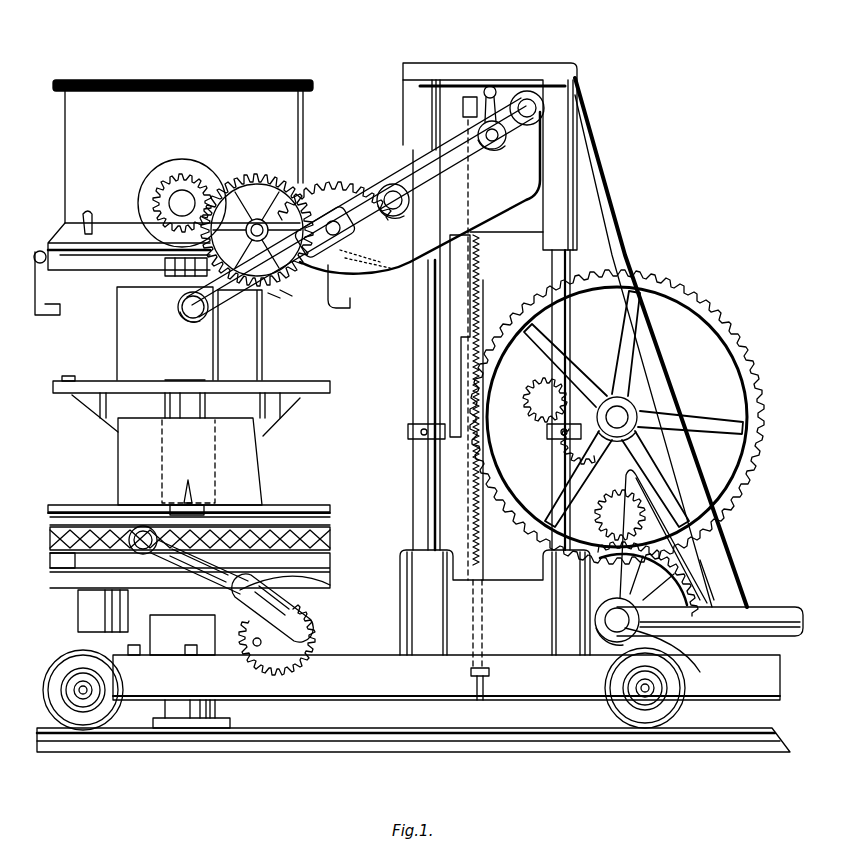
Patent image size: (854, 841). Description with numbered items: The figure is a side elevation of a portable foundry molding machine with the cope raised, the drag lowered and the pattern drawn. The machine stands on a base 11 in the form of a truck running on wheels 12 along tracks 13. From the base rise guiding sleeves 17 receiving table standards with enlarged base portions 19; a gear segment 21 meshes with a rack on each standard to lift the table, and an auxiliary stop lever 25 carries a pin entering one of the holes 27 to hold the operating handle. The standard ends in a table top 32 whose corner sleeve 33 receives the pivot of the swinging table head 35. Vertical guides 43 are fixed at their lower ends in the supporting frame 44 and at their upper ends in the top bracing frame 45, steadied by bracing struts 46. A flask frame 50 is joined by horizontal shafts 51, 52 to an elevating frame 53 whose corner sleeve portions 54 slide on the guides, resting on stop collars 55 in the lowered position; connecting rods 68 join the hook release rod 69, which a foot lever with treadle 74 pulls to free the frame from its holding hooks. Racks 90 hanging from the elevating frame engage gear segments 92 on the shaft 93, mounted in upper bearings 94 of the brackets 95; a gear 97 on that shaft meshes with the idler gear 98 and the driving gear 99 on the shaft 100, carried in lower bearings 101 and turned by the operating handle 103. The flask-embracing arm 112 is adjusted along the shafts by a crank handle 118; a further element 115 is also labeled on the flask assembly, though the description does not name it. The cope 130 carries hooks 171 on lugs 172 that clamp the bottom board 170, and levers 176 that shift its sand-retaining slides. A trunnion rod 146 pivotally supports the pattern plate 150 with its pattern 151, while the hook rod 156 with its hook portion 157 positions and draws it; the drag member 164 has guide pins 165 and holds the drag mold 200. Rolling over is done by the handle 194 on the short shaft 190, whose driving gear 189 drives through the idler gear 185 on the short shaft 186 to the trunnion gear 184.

The base 11 is at (326, 683).
The wheels 12 is at (648, 712).
The tracks 13 is at (262, 742).
The guiding sleeve 17 is at (168, 632).
The enlarged base portion 19 is at (178, 728).
The gear segment 21 is at (318, 607).
The auxiliary stop lever 25 is at (320, 545).
The holes 27 is at (256, 648).
The table top 32 is at (318, 580).
The guiding sleeve 33 is at (85, 614).
The swinging table head 35 is at (62, 558).
The guides 43 is at (415, 346).
The guiding bar supporting frame 44 is at (383, 638).
The top guide bar bracing frame 45 is at (418, 66).
The bracing struts 46 is at (612, 172).
The flask frame 50 is at (363, 207).
The horizontal shaft 51 is at (530, 98).
The horizontal shaft 52 is at (392, 184).
The elevating frame 53 is at (523, 215).
The sleeve portions 54 is at (412, 108).
The adjustable stop collar 55 is at (408, 432).
The connecting rods 68 is at (470, 88).
The hook release rod 69 is at (480, 521).
The treadle portion 74 is at (471, 672).
The racks 90 is at (452, 385).
The gear segment 92 is at (666, 295).
The shaft 93 is at (622, 412).
The upper shaft bearings 94 is at (604, 436).
The brackets 95 is at (735, 596).
The gear 97 is at (548, 383).
The intermediate idler gear 98 is at (622, 540).
The driving gear 99 is at (690, 572).
The shaft 100 is at (674, 657).
The lower bearings 101 is at (606, 622).
The operating handle 103 is at (710, 613).
The flask-embracing arm 112 is at (360, 182).
The tray 115 is at (103, 271).
The crank handle 118 is at (495, 120).
The cope 130 is at (68, 128).
The rod or shaft 146 is at (170, 282).
The pattern plate 150 is at (88, 380).
The pattern 151 is at (235, 357).
The pattern positioning and pattern drawing hook rod 156 is at (212, 342).
The hook portion 157 is at (172, 385).
The drag member 164 is at (330, 512).
The guide pins 165 is at (185, 490).
The bottom board 170 is at (330, 537).
The hooks 171 is at (36, 294).
The lugs 172 is at (38, 250).
The levers 176 is at (91, 214).
The gear 184 is at (182, 176).
The idler gear 185 is at (246, 182).
The short shaft 186 is at (262, 218).
The driving gear 189 is at (300, 281).
The short shaft 190 is at (340, 230).
The handle 194 is at (178, 310).
The drag mold 200 is at (125, 430).